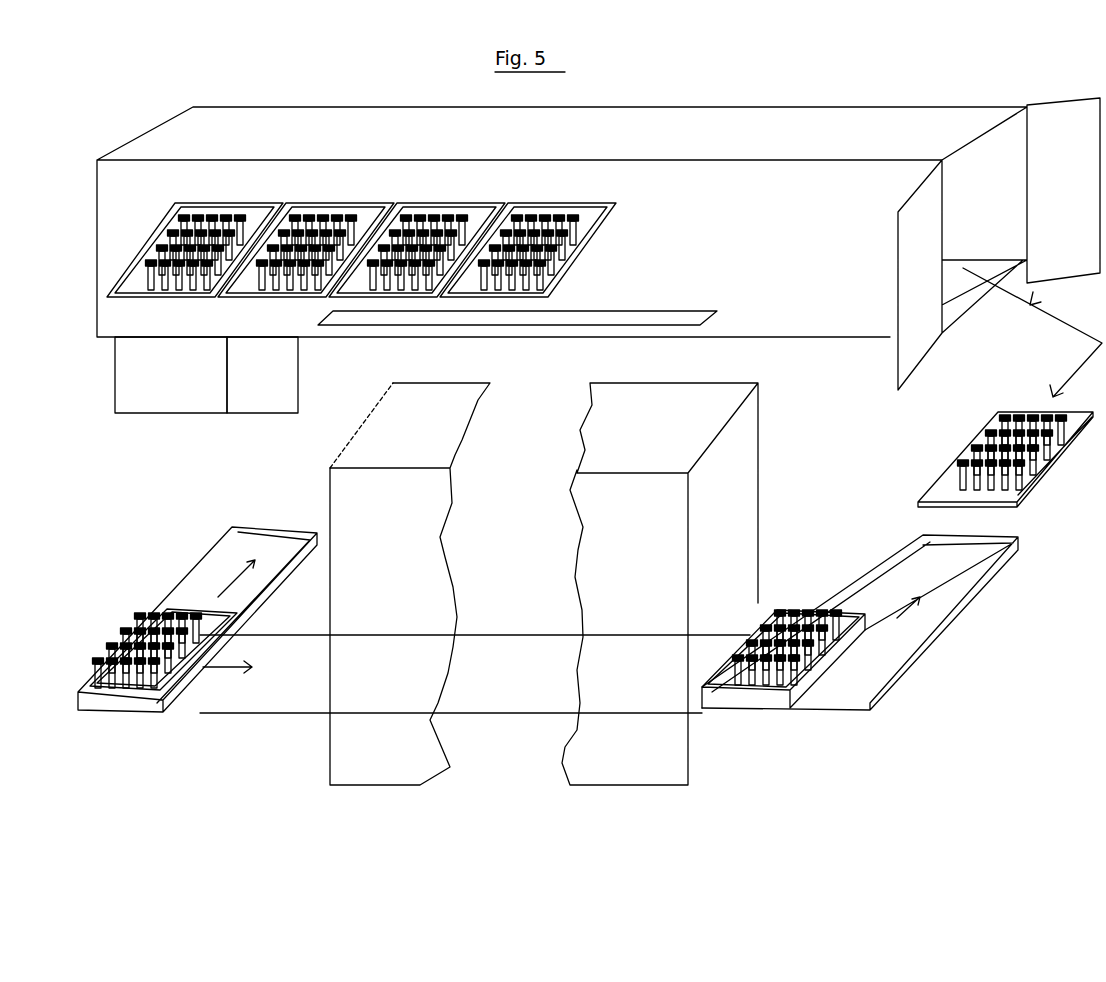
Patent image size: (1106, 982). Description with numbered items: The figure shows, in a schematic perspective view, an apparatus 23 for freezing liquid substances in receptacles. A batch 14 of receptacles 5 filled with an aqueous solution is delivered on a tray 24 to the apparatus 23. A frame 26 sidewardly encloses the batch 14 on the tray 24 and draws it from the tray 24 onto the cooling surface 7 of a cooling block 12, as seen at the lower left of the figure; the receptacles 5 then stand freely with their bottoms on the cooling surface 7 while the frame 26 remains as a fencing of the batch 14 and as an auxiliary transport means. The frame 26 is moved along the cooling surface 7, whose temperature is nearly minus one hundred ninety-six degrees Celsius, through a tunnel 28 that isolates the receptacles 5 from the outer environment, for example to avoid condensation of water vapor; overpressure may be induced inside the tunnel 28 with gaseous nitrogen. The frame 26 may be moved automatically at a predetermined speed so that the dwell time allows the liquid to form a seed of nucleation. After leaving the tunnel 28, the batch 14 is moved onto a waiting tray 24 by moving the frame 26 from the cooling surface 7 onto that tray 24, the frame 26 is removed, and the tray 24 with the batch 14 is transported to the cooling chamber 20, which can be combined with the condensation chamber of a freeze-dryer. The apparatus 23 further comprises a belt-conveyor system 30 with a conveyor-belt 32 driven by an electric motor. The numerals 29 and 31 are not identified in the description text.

The receptacles 5 is at (120, 670).
The cooling surface 7 is at (502, 655).
The cooling block 12 is at (550, 705).
The batch 14 is at (313, 203).
The cooling chamber 20 is at (858, 123).
The apparatus 23 is at (545, 408).
The tray 24 is at (250, 213).
The frame 26 is at (188, 687).
The tunnel 28 is at (710, 400).
The supply lines 29 is at (227, 399).
The belt-conveyor system 30 is at (248, 392).
The control unit 31 is at (137, 392).
The conveyor-belt 32 is at (333, 368).